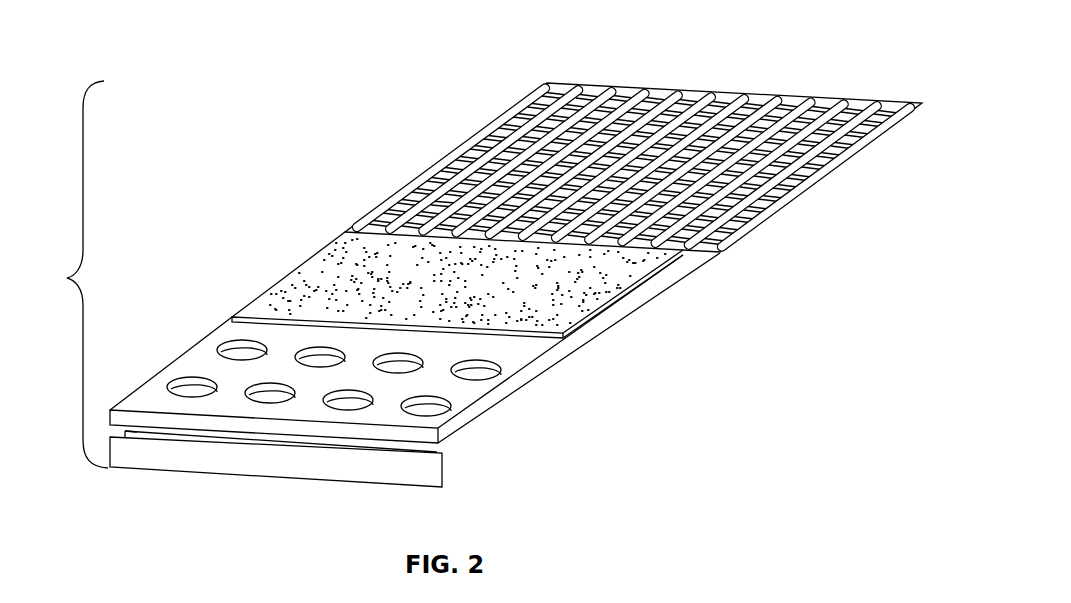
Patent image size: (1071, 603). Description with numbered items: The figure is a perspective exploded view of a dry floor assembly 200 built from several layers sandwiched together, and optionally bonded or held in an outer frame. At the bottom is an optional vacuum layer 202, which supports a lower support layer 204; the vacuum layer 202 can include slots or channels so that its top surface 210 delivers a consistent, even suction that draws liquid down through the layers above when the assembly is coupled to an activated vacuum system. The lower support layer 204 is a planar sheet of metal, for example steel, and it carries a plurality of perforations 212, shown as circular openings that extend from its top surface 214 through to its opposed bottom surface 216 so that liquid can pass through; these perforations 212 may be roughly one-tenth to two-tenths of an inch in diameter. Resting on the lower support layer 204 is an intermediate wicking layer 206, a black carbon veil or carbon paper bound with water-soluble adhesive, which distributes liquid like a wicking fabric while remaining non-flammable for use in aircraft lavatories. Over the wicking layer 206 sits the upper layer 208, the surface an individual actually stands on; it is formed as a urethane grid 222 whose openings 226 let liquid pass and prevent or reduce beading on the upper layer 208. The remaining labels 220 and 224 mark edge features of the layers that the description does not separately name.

The dry floor assembly 200 is at (66, 277).
The vacuum layer 202 is at (424, 488).
The lower support layer 204 is at (415, 348).
The wicking layer 206 is at (473, 297).
The upper layer 208 is at (640, 127).
The top surface 210 is at (437, 452).
The perforations 212 is at (190, 386).
The top surface 214 is at (218, 327).
The bottom surface 216 is at (127, 430).
The edge region 220 is at (263, 294).
The grid 222 is at (822, 100).
The edge rib 224 is at (919, 100).
The openings 226 is at (788, 97).